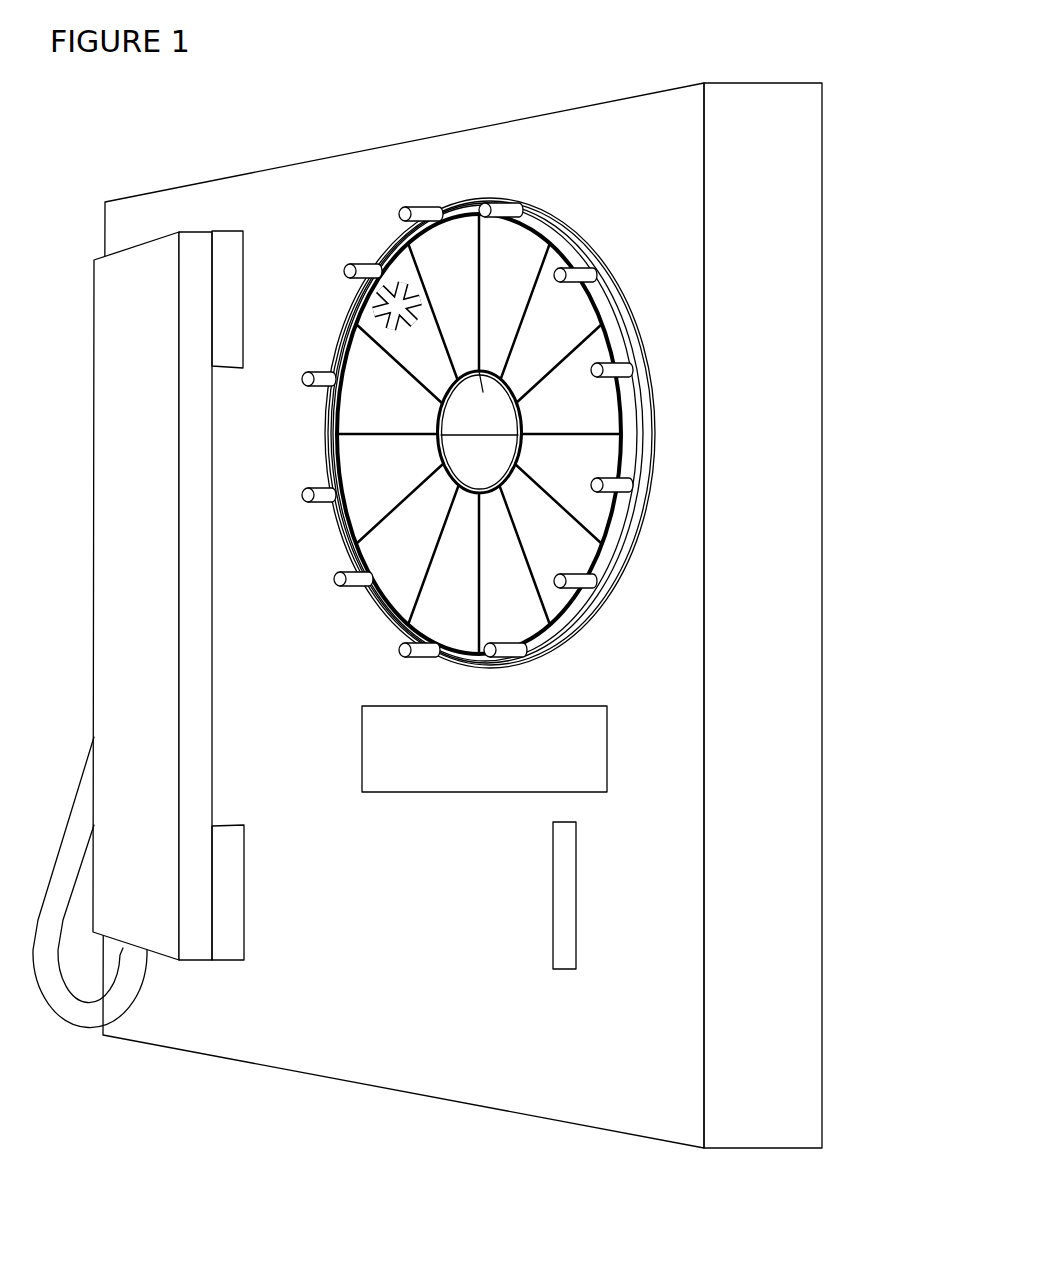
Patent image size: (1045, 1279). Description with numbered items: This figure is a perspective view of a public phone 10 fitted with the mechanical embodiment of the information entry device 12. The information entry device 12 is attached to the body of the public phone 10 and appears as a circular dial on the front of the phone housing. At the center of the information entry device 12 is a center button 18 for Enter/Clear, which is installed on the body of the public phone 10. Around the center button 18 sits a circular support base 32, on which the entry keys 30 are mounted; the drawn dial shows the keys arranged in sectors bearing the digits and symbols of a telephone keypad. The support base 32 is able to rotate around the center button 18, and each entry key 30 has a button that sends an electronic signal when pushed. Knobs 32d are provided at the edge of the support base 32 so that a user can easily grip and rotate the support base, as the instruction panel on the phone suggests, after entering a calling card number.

The public phone 10 is at (413, 122).
The information entry device 12 is at (664, 455).
The center button 18 is at (483, 392).
The entry key 30 is at (602, 348).
The support base 32 is at (622, 520).
The knob 32d is at (627, 370).